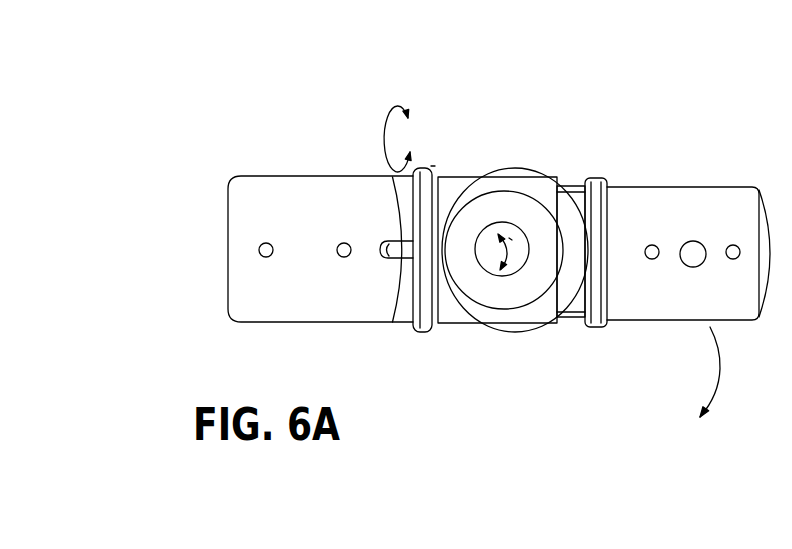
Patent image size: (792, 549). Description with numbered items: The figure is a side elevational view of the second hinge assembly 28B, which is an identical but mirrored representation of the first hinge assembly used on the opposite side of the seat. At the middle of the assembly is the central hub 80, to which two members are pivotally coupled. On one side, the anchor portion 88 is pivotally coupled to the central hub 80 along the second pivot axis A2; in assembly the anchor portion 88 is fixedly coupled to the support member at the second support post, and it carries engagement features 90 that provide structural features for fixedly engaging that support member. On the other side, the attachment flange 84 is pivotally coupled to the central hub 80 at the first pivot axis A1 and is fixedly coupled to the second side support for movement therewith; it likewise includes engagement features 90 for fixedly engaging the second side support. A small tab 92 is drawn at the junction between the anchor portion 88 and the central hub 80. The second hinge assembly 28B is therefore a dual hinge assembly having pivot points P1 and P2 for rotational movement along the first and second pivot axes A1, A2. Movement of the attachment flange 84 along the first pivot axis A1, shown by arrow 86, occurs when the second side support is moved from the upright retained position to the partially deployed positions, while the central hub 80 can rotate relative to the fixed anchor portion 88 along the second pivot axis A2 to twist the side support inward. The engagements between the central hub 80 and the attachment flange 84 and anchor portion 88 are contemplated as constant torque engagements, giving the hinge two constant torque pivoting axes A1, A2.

The second hinge assembly 28B is at (293, 138).
The central hub 80 is at (482, 162).
The attachment flange 84 is at (690, 187).
The arrow 86 is at (723, 357).
The anchor portion 88 is at (273, 177).
The engagement features 90 is at (338, 257).
The tab 92 is at (391, 249).
The first pivot axis A1 is at (511, 251).
The second pivot axis A2 is at (390, 110).
The pivot point P1 is at (511, 238).
The pivot point P2 is at (433, 167).